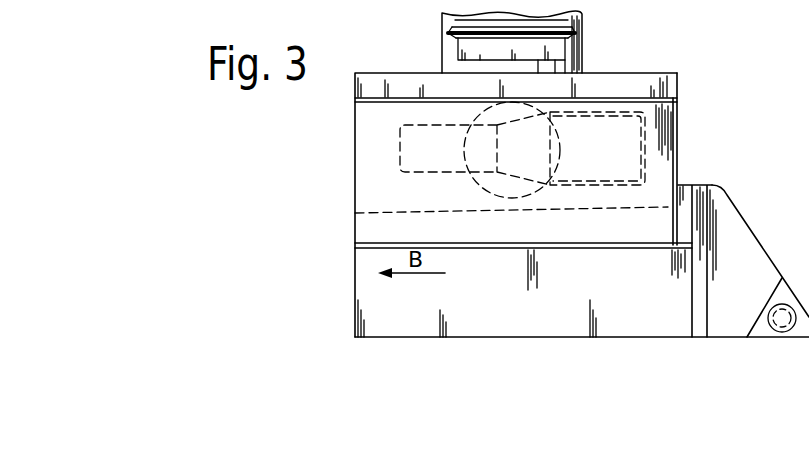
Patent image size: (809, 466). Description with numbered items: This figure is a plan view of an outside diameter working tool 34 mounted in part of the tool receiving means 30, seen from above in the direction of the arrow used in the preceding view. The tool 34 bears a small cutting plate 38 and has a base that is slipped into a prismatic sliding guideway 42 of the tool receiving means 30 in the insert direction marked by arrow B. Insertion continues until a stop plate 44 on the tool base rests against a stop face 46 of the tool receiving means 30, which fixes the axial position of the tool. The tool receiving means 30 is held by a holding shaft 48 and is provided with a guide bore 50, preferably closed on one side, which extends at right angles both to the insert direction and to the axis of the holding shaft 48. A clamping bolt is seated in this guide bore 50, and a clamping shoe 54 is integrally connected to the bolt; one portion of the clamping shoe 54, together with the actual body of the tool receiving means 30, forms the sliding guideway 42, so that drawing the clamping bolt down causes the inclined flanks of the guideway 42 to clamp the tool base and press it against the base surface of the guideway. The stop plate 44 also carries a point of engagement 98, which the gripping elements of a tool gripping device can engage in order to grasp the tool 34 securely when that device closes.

The tool receiving means 30 is at (593, 50).
The outside diameter working tool 34 is at (754, 208).
The cutting plate 38 is at (800, 332).
The sliding guideway 42 is at (380, 213).
The stop plate 44 is at (681, 187).
The stop face 46 is at (678, 128).
The holding shaft 48 is at (442, 50).
The guide bore 50 is at (493, 181).
The clamping shoe 54 is at (363, 150).
The point of engagement 98 is at (701, 338).